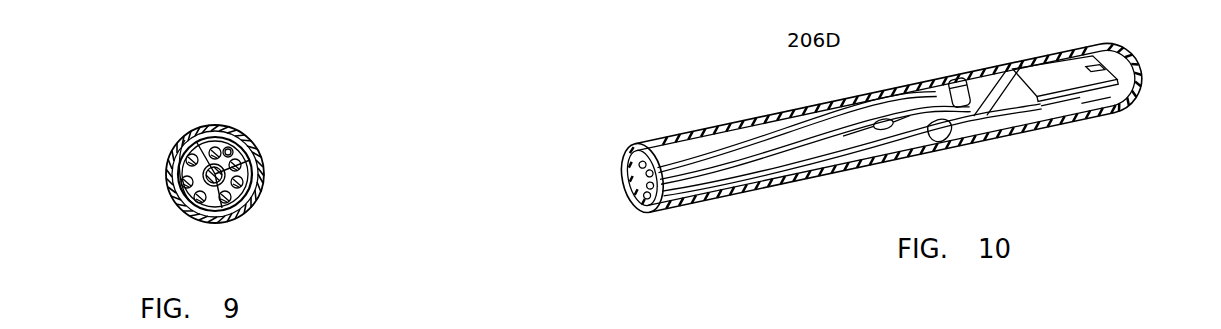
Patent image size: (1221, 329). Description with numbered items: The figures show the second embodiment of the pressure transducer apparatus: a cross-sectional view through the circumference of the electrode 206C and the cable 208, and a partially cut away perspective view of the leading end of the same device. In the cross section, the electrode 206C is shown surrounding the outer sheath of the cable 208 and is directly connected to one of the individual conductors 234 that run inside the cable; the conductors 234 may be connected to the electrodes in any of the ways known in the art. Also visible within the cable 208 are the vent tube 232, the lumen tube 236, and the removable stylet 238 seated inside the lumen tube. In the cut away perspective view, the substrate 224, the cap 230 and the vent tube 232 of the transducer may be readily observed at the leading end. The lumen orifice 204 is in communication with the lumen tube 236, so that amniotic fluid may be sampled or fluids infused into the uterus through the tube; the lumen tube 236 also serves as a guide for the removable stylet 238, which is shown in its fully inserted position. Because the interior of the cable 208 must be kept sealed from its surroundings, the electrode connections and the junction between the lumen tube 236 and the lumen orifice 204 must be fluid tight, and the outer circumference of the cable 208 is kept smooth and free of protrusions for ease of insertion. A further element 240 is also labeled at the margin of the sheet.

In FIG. 10, the lumen orifice 204 is at (963, 92).
In FIG. 9, the electrode 206C is at (264, 186).
In FIG. 9, the cable 208 is at (262, 158).
In FIG. 10, the cable 208 is at (766, 120).
In FIG. 10, the substrate 224 is at (1058, 70).
In FIG. 10, the cap 230 is at (1100, 97).
In FIG. 9, the vent tube 232 is at (253, 132).
In FIG. 10, the vent tube 232 is at (1057, 97).
In FIG. 9, the individual conductors 234 is at (174, 183).
In FIG. 10, the individual conductors 234 is at (837, 118).
In FIG. 9, the lumen tube 236 is at (193, 172).
In FIG. 10, the lumen tube 236 is at (883, 123).
In FIG. 9, the removable stylet 238 is at (190, 137).
In FIG. 10, the removable stylet 238 is at (945, 128).
In FIG. 10, the connector 240 is at (622, 328).